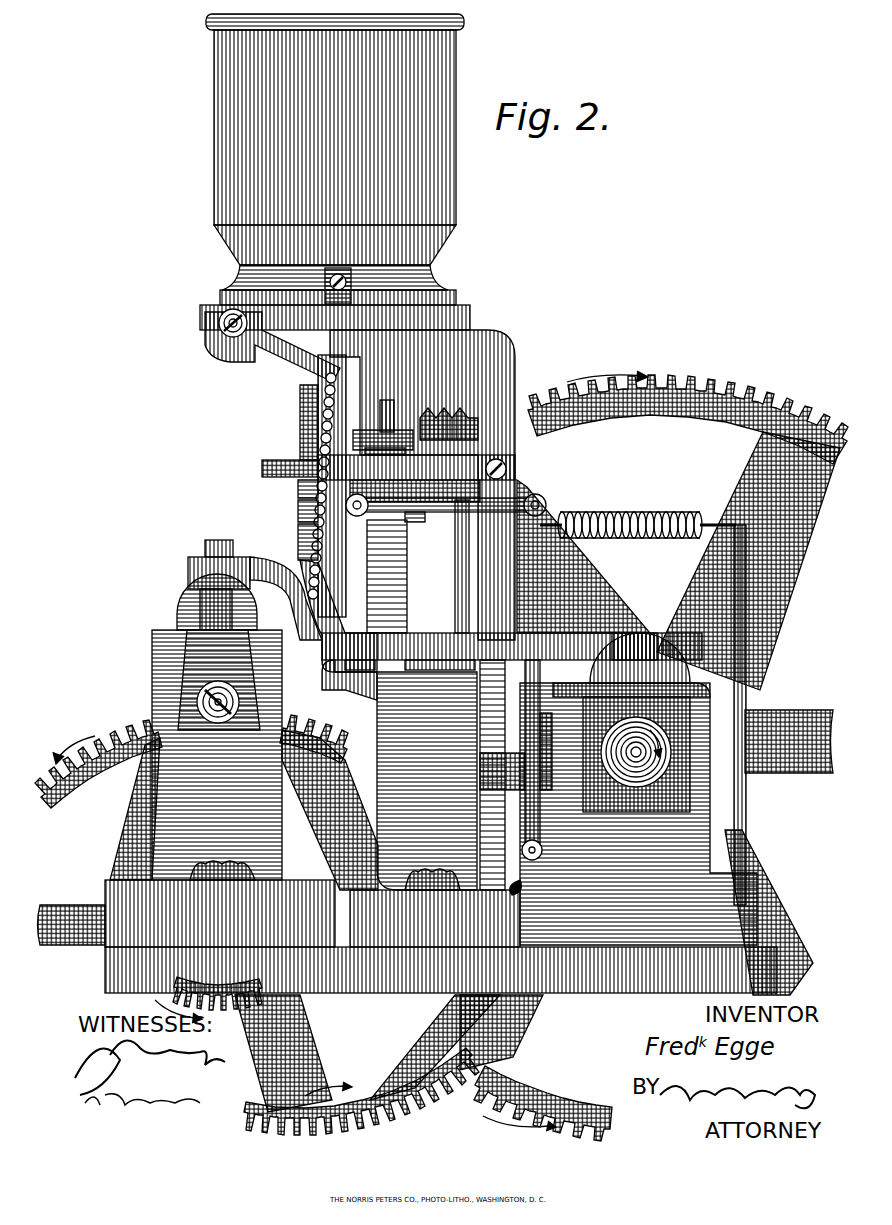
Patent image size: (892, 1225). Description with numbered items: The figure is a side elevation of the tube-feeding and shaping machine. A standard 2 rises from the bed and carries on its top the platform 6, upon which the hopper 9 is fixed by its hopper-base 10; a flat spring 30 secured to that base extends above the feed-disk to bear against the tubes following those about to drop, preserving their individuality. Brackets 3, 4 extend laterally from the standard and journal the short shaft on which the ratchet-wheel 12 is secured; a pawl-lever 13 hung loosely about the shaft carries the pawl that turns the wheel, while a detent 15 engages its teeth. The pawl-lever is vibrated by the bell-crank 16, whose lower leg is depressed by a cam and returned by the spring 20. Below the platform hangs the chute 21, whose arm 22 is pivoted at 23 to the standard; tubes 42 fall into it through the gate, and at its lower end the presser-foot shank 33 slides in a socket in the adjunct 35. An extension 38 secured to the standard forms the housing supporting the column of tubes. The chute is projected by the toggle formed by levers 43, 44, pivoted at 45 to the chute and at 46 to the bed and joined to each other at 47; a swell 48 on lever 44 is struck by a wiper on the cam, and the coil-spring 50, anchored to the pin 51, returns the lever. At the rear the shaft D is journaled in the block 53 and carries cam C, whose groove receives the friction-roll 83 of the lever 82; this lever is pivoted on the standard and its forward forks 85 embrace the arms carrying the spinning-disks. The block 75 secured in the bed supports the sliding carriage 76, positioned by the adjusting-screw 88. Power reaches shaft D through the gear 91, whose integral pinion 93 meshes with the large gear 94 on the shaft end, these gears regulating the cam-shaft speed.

The hopper 9 is at (335, 152).
The flat spring 30 is at (347, 270).
The hopper-base 10 is at (440, 281).
The platform 6 is at (470, 323).
The standard 2 is at (512, 364).
The pivot 23 is at (222, 334).
The arm 22 is at (292, 371).
The bracket 3 is at (426, 378).
The bell-crank 16 is at (395, 417).
The pawl-lever 13 is at (361, 432).
The chute 21 is at (318, 448).
The detent 15 is at (458, 478).
The ratchet-wheel 12 is at (275, 470).
The tubes 42 is at (300, 495).
The shank 33 is at (300, 517).
The adjunct 35 is at (300, 540).
The pivot 47 is at (543, 500).
The coil-spring 50 is at (637, 522).
The bracket 4 is at (448, 490).
The pivot 45 is at (412, 520).
The lever 43 is at (460, 512).
The lever 44 is at (572, 602).
The forks 85 is at (188, 573).
The extension 38 is at (346, 633).
The lever 82 is at (458, 635).
The friction-roll 83 is at (625, 645).
The pin 51 is at (746, 652).
The sliding carriage 76 is at (219, 680).
The adjusting-screw 88 is at (218, 723).
The block 75 is at (220, 788).
The gear 91 is at (88, 788).
The large gear 94 is at (702, 406).
The cam C is at (652, 668).
The shaft D is at (658, 772).
The pivot 46 is at (545, 855).
The block 53 is at (638, 789).
The spring 20 is at (520, 893).
The pinion 93 is at (206, 1010).
The swell 48 is at (543, 756).